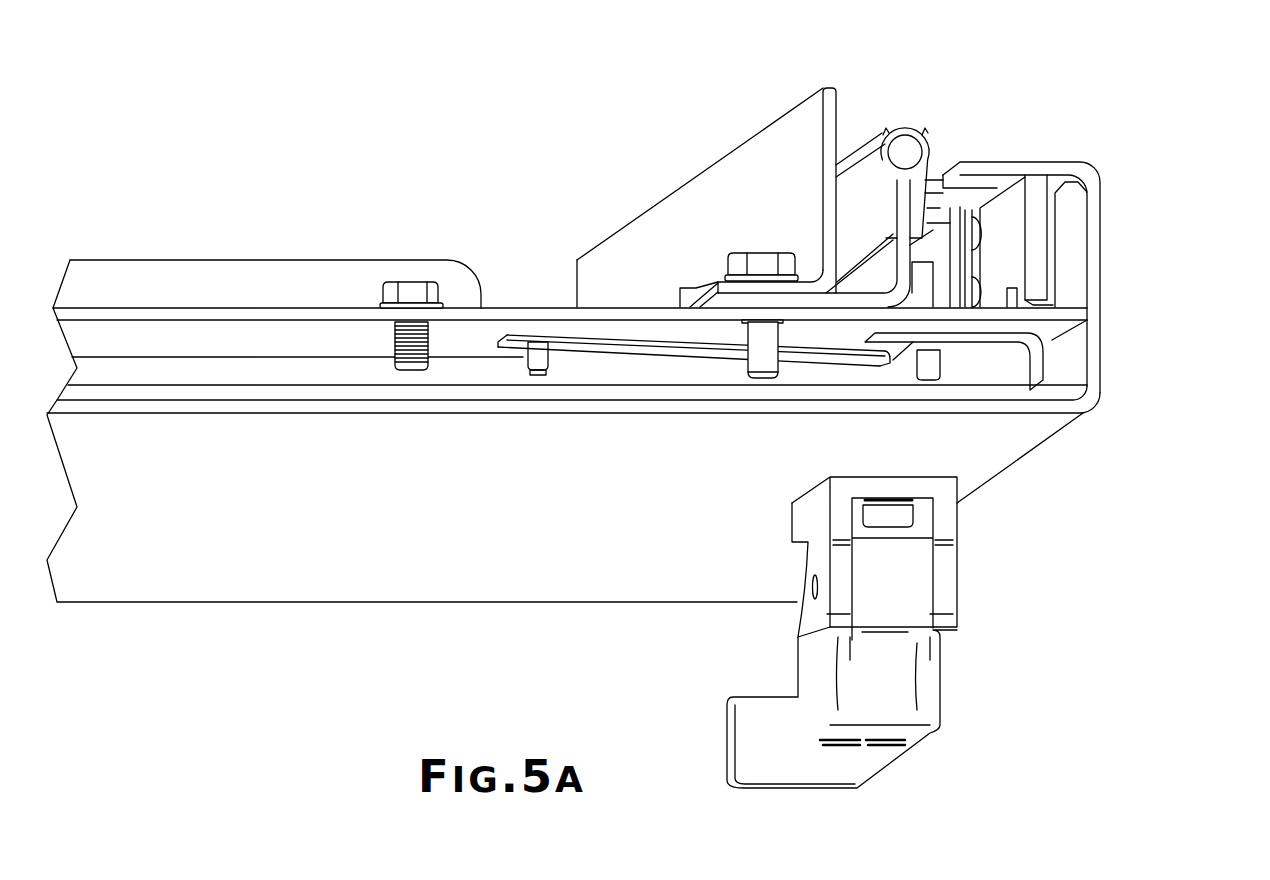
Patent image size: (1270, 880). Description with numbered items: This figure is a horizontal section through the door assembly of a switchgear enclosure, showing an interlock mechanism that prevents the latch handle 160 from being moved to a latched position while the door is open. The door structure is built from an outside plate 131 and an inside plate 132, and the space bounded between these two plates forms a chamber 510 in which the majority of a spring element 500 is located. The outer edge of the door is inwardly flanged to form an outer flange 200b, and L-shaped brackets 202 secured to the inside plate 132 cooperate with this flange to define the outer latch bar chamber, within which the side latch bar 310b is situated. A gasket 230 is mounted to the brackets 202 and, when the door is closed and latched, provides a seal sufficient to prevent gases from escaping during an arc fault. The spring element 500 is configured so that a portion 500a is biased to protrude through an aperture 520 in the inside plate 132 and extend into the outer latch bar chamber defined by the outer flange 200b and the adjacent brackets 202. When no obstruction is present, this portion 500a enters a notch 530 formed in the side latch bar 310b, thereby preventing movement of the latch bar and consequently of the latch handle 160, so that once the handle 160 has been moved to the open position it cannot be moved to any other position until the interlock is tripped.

The chamber 510 is at (345, 362).
The spring element 500 is at (628, 343).
The L-shaped bracket 202 is at (903, 217).
The gasket 230 is at (908, 130).
The notch 530 is at (1013, 290).
The outer flange 200b is at (1066, 160).
The side latch bar 310b is at (1040, 212).
The inside plate 132 is at (1070, 315).
The spring element portion 500a is at (1037, 368).
The outside plate 131 is at (1058, 407).
The aperture 520 is at (883, 337).
The latch handle 160 is at (897, 747).